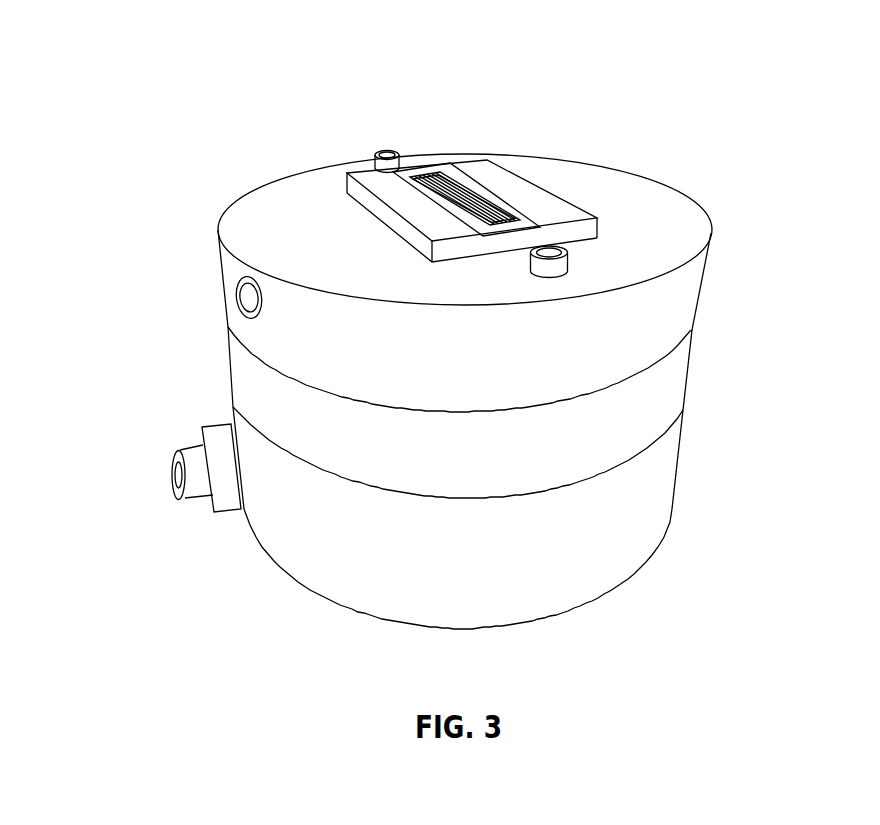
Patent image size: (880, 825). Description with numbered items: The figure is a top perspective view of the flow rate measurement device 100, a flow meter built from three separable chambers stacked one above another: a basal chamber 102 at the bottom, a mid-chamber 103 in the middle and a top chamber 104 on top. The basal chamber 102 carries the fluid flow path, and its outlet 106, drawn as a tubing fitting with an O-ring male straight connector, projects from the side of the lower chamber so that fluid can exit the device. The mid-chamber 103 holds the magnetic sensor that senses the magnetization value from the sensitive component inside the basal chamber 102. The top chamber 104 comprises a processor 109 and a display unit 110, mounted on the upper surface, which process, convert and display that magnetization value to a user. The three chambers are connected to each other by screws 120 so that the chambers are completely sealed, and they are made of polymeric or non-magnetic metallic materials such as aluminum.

The flow rate measurement device 100 is at (692, 72).
The basal chamber 102 is at (633, 497).
The mid-chamber 103 is at (665, 387).
The top chamber 104 is at (667, 297).
The outlet 106 is at (172, 472).
The processor 109 is at (493, 182).
The display unit 110 is at (433, 175).
The screws 120 is at (377, 152).